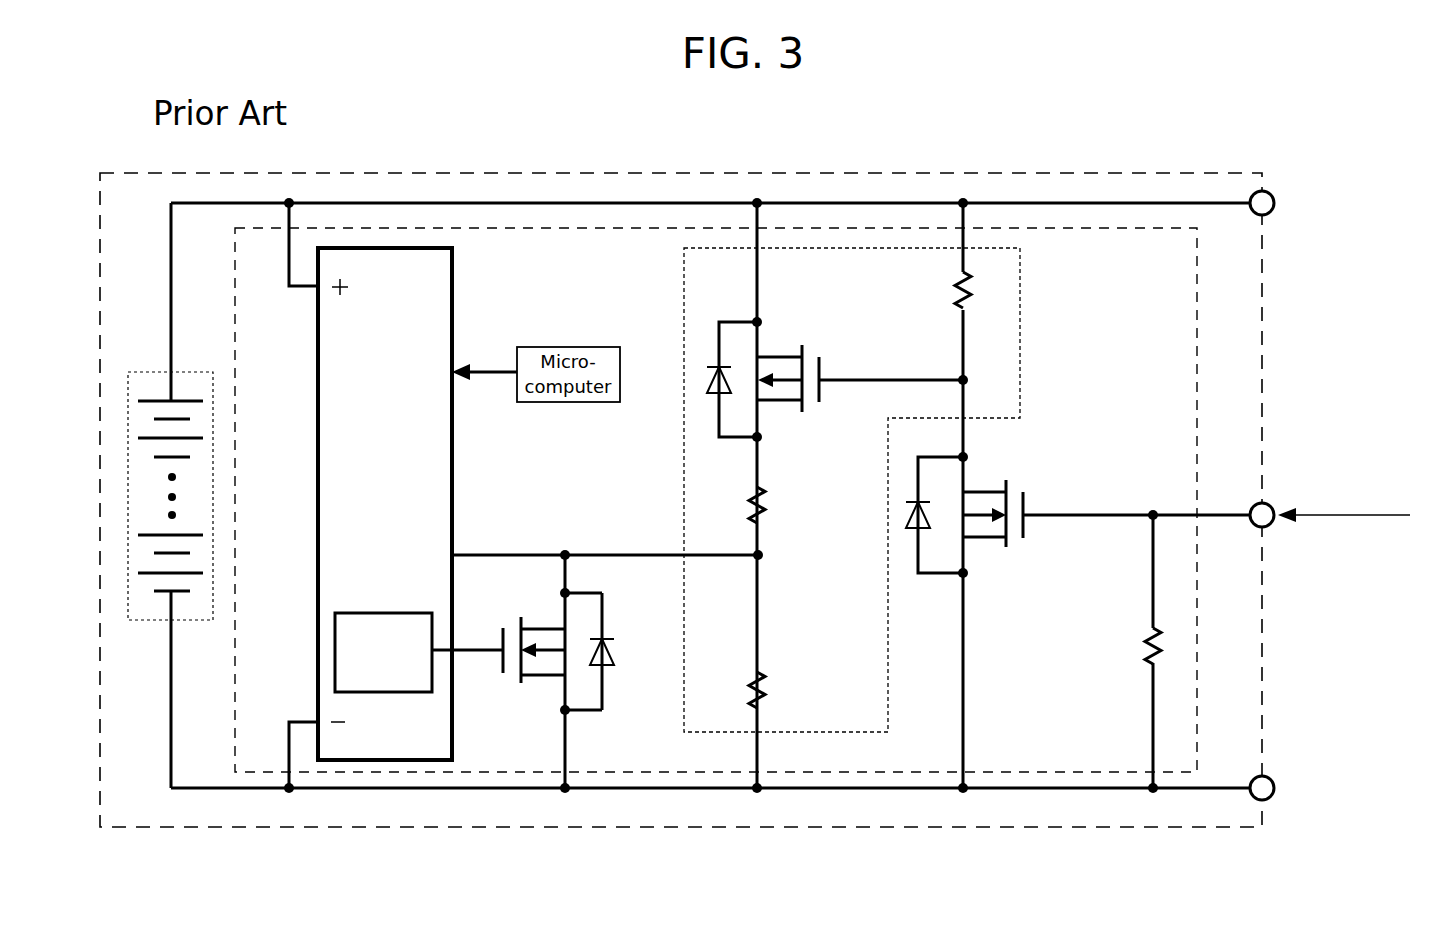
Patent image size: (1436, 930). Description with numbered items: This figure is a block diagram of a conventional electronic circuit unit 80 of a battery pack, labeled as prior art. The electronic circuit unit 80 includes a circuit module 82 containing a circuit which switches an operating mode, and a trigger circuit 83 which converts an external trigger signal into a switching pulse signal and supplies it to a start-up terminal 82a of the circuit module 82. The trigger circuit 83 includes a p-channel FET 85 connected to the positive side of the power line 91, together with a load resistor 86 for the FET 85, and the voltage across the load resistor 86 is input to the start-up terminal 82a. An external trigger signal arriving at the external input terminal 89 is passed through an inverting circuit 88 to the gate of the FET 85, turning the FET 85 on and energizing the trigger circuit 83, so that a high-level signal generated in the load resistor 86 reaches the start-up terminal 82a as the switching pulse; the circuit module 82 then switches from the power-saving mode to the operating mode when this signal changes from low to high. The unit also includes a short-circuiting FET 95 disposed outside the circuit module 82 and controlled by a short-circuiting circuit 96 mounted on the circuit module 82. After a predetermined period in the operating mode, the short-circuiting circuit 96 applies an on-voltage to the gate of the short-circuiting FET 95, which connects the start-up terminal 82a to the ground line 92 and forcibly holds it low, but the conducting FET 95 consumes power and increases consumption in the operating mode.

The electronic circuit unit 80 is at (1197, 337).
The circuit module 82 is at (382, 248).
The start-up terminal 82a is at (452, 548).
The trigger circuit 83 is at (1020, 347).
The p-channel FET 85 is at (795, 330).
The load resistor 86 is at (765, 500).
The inverting circuit 88 is at (1002, 575).
The external input terminal 89 is at (1276, 501).
The power line 91 is at (687, 202).
The ground line 92 is at (697, 790).
The short-circuiting FET 95 is at (533, 712).
The short-circuiting circuit 96 is at (385, 692).